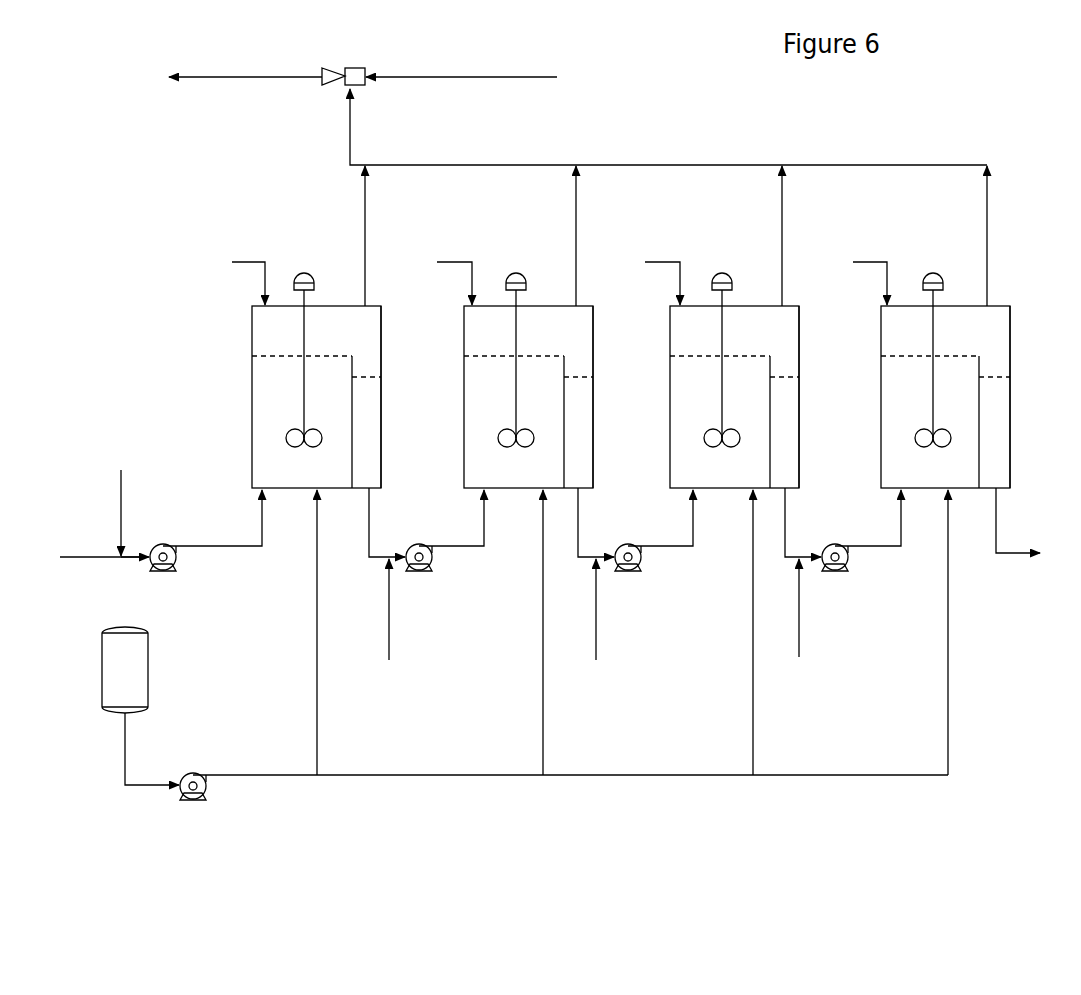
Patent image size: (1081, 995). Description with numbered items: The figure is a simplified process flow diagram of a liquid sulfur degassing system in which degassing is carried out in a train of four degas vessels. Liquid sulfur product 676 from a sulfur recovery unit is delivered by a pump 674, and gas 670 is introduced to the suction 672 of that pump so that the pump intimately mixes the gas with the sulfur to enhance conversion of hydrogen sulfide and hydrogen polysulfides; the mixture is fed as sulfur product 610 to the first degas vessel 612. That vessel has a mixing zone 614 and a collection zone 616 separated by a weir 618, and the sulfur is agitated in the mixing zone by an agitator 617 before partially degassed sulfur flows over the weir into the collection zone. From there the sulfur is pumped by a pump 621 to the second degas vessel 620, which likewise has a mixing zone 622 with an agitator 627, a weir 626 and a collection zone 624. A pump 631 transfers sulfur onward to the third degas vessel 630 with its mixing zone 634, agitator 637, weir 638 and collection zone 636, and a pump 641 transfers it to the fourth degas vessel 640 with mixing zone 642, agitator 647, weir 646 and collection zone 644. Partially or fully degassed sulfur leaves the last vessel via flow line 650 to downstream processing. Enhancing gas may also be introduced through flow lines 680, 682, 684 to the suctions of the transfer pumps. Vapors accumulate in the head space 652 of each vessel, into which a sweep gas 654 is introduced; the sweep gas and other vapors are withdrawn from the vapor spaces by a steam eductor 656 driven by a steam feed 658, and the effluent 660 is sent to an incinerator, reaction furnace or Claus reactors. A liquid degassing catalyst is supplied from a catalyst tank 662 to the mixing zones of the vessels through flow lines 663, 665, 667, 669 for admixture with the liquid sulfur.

The sulfur product flow line 610 is at (255, 552).
The first degas vessel 612 is at (252, 349).
The mixing zone 614 is at (257, 398).
The collection zone 616 is at (381, 416).
The agitator 617 is at (301, 272).
The weir 618 is at (369, 491).
The second degas vessel 620 is at (464, 347).
The pump 621 is at (421, 544).
The mixing zone 622 is at (472, 408).
The collection zone 624 is at (593, 421).
The weir 626 is at (578, 491).
The agitator 627 is at (513, 272).
The third degas vessel 630 is at (670, 339).
The pump 631 is at (630, 544).
The mixing zone 634 is at (677, 394).
The collection zone 636 is at (798, 426).
The agitator 637 is at (718, 272).
The weir 638 is at (785, 491).
The fourth degas vessel 640 is at (881, 343).
The pump 641 is at (836, 544).
The mixing zone 642 is at (886, 400).
The collection zone 644 is at (1007, 421).
The weir 646 is at (996, 491).
The agitator 647 is at (929, 272).
The flow line 650 is at (1010, 556).
The head space 652 is at (330, 340).
The sweep gas 654 is at (240, 260).
The steam eductor 656 is at (355, 68).
The steam feed 658 is at (463, 80).
The effluent 660 is at (207, 79).
The catalyst tank 662 is at (140, 717).
The flow line 663 is at (322, 727).
The flow line 665 is at (545, 697).
The flow line 667 is at (755, 710).
The flow line 669 is at (952, 704).
The gas 670 is at (121, 500).
The suction 672 is at (132, 563).
The pump 674 is at (160, 544).
The liquid sulfur product 676 is at (70, 560).
The flow line 680 is at (389, 635).
The flow line 682 is at (598, 643).
The flow line 684 is at (802, 635).